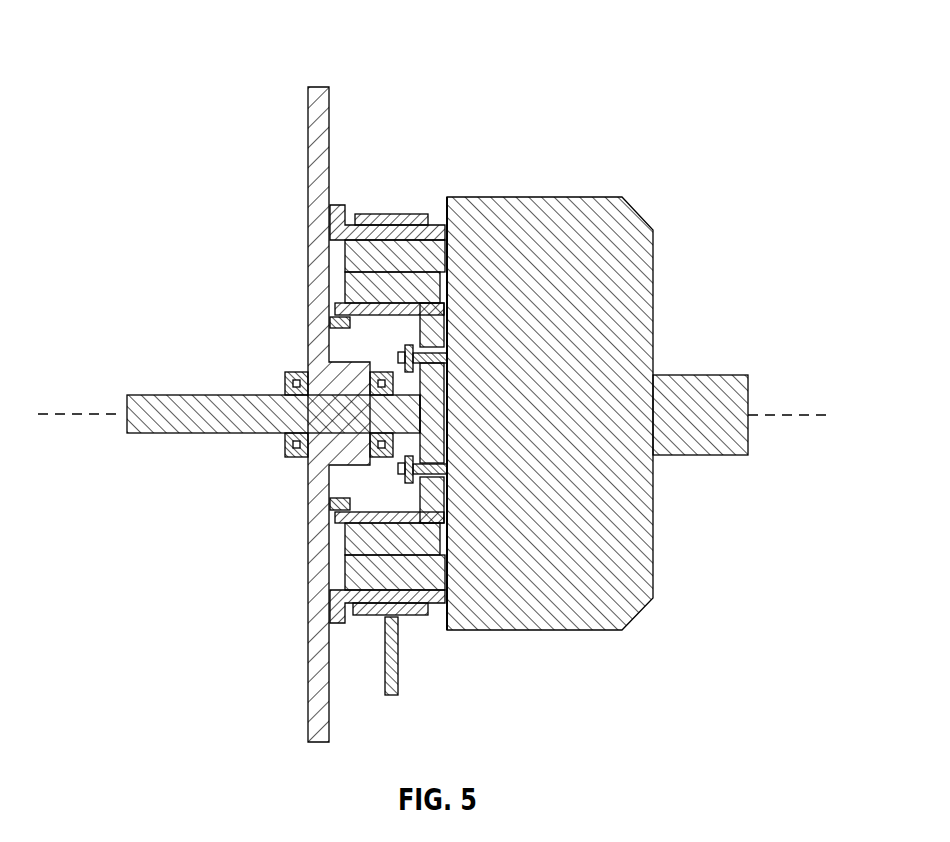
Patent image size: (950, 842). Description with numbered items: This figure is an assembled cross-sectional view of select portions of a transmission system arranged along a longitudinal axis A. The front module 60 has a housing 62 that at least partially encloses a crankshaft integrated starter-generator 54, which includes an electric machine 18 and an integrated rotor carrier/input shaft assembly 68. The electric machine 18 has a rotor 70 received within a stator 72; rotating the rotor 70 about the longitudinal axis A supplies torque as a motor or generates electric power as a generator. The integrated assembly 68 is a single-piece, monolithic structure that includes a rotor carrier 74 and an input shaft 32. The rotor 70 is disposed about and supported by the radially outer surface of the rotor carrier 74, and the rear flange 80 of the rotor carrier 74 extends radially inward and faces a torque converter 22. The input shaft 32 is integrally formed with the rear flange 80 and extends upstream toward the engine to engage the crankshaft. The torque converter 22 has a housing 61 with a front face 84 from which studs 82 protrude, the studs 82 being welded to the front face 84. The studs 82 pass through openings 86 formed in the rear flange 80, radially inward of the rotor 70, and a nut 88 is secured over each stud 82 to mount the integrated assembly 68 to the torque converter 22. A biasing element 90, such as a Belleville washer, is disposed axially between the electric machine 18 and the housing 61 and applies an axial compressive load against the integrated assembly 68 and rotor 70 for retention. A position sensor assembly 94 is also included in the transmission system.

The front module 60 is at (276, 69).
The housing 62 is at (311, 122).
The crankshaft integrated starter-generator 54 is at (364, 205).
The electric machine 18 is at (398, 229).
The rotor carrier 74 is at (414, 303).
The housing 61 is at (604, 196).
The torque converter 22 is at (659, 204).
The position sensor assembly 94 is at (331, 307).
The biasing element 90 is at (444, 300).
The rear flange 80 is at (444, 314).
The openings 86 is at (446, 352).
The input shaft 32 is at (177, 430).
The longitudinal axis A is at (813, 416).
The studs 82 is at (447, 470).
The nut 88 is at (410, 446).
The rotor 70 is at (357, 538).
The stator 72 is at (372, 578).
The integrated rotor carrier/input shaft assembly 68 is at (448, 592).
The front face 84 is at (447, 627).